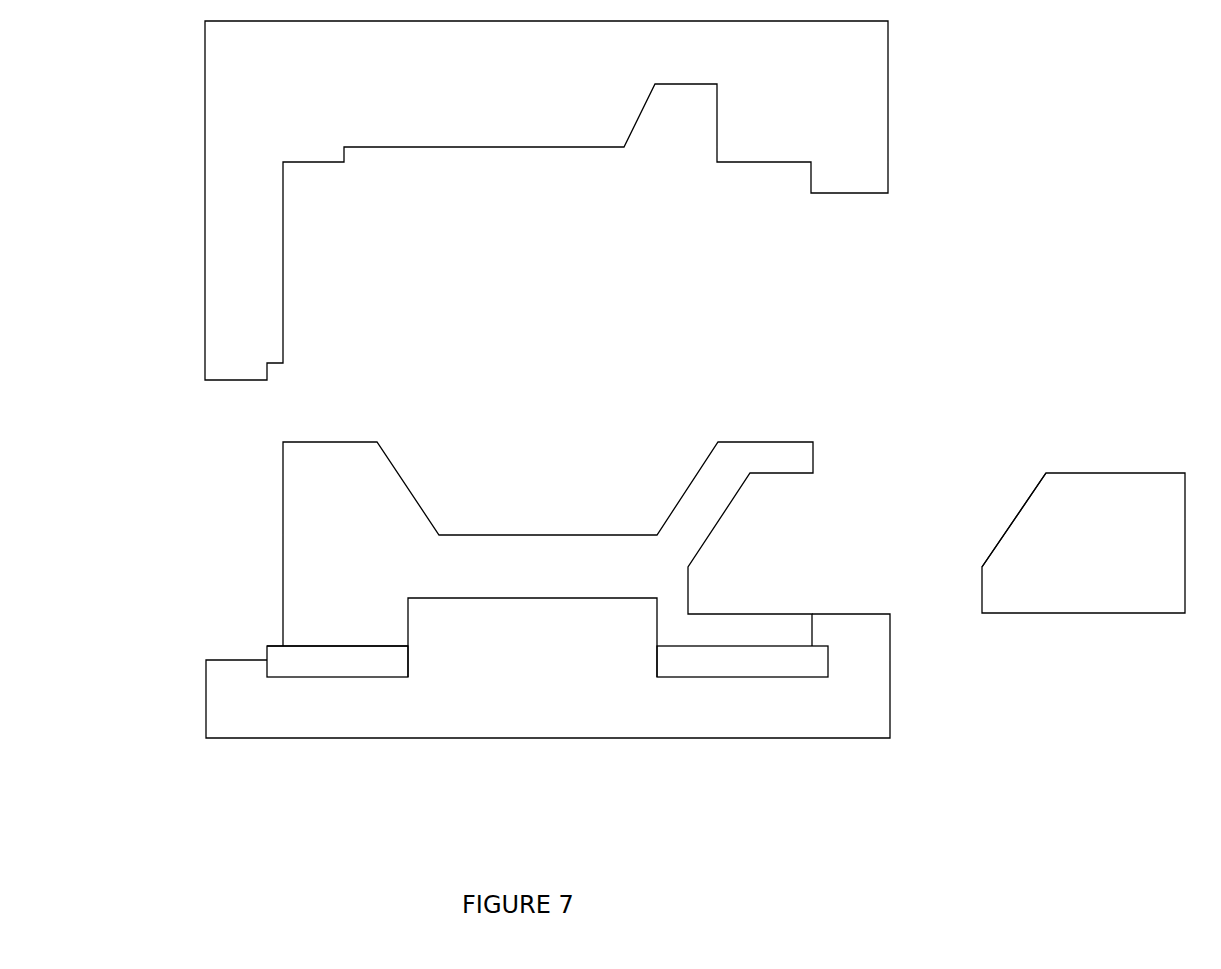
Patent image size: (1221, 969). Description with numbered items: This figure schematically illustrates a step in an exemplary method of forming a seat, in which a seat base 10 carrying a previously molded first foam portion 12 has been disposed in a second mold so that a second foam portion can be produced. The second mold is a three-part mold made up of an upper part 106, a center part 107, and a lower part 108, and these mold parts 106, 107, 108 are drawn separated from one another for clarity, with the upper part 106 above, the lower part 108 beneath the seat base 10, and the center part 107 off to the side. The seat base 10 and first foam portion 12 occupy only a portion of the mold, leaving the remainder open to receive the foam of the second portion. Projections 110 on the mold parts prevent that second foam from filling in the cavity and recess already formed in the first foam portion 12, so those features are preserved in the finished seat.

The upper part 106 is at (187, 206).
The center part 107 is at (1115, 454).
The lower part 108 is at (189, 680).
The projections 110 is at (544, 578).
The seat base 10 is at (301, 693).
The first foam portion 12 is at (367, 665).